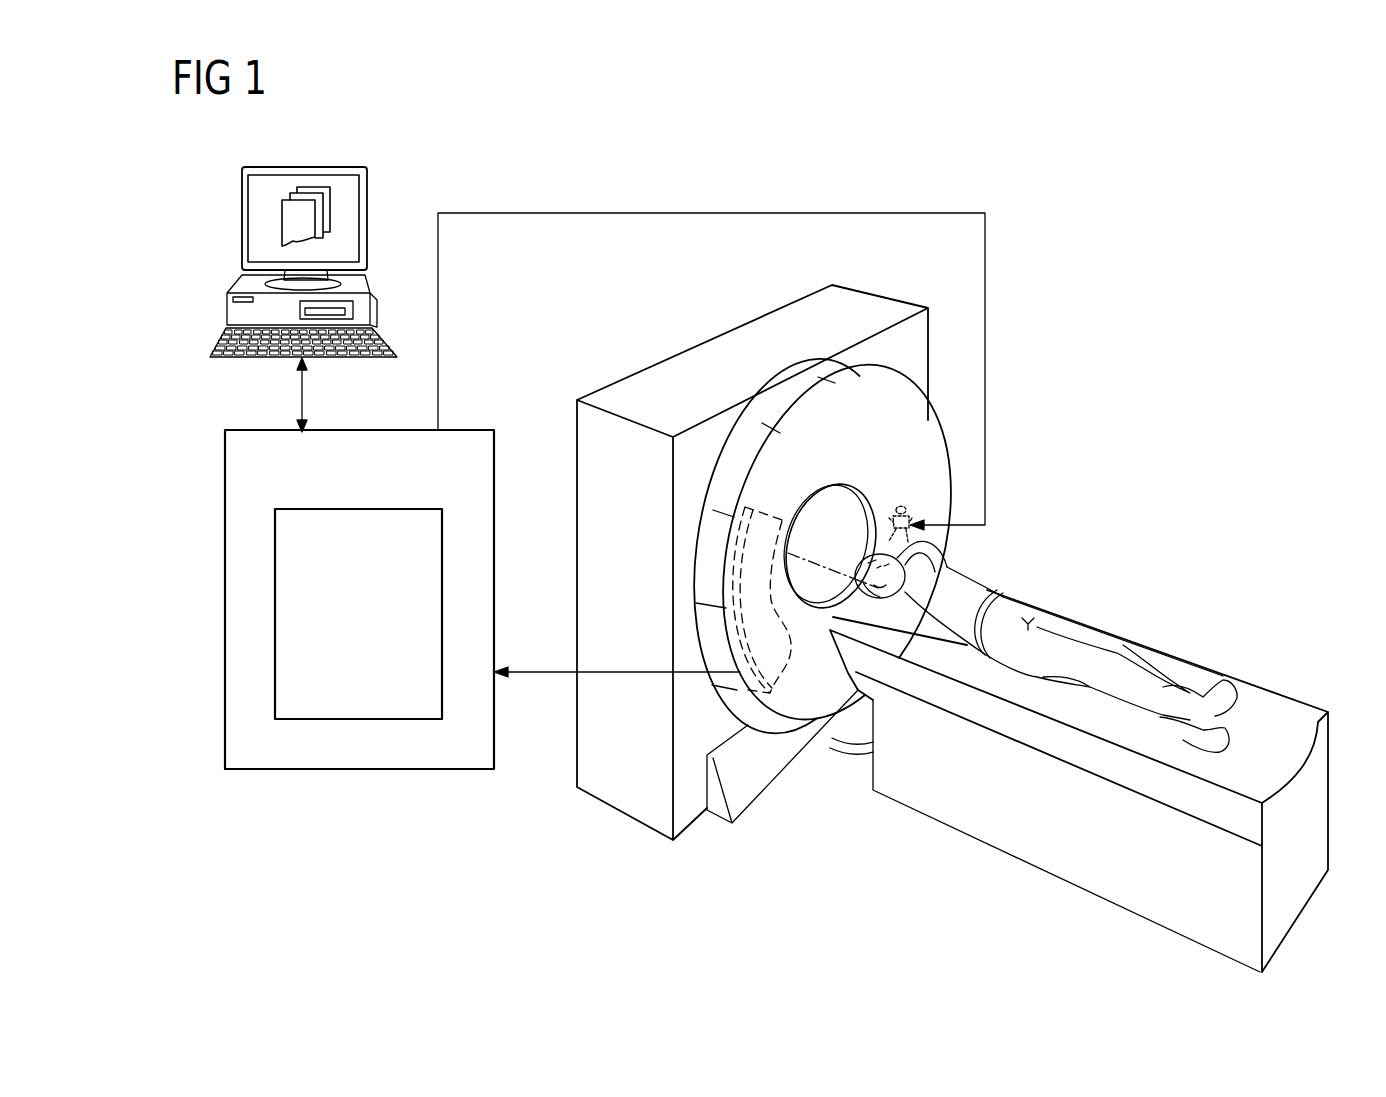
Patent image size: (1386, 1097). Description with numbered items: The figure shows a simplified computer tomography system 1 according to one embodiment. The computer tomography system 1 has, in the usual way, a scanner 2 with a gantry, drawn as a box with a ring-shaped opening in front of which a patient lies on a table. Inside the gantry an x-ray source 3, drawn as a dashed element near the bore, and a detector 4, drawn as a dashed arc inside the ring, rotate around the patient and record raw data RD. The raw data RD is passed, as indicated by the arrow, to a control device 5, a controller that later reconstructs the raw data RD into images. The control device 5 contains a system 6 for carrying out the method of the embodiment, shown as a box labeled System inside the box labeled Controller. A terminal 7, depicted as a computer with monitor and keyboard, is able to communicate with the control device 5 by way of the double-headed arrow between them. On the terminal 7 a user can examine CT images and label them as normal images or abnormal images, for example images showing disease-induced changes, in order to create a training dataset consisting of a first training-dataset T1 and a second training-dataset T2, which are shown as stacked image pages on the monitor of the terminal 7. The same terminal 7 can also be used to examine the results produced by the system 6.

The computer tomography system 1 is at (1158, 412).
The scanner 2 is at (714, 347).
The x-ray source 3 is at (902, 505).
The detector 4 is at (777, 663).
The control device 5 is at (225, 600).
The system 6 is at (360, 509).
The terminal 7 is at (242, 214).
The first training-dataset T1 is at (282, 200).
The second training-dataset T2 is at (306, 193).
The raw data RD is at (548, 668).